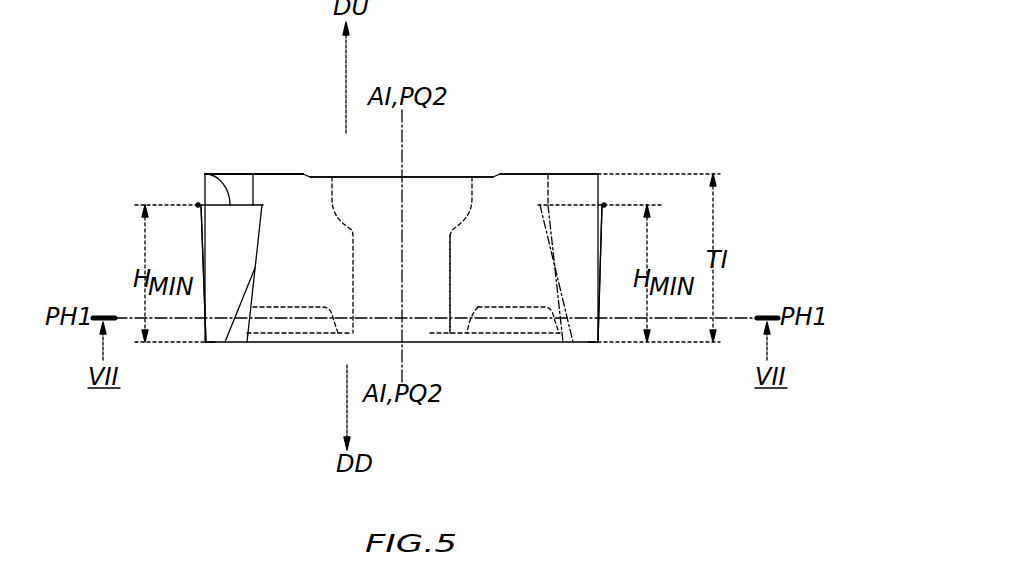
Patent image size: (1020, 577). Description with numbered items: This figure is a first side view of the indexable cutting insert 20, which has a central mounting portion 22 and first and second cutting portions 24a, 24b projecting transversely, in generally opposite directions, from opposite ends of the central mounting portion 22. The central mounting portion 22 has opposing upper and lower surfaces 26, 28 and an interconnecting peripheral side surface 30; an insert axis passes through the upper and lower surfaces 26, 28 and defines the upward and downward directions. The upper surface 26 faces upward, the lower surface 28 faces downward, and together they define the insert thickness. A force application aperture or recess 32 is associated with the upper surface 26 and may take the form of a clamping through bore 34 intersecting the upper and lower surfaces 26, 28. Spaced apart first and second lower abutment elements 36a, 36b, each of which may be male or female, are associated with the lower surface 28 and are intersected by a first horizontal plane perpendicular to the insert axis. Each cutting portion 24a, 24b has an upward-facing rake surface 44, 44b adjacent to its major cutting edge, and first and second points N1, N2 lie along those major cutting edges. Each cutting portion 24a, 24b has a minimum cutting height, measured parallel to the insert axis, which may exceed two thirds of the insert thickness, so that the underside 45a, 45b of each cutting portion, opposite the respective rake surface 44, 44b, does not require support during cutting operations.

The indexable cutting insert 20 is at (600, 95).
The upper surface 26 is at (253, 172).
The rake surface 44 is at (206, 172).
The first point N1 is at (198, 204).
The first cutting portion 24a is at (200, 260).
The underside of first cutting portion 45a is at (208, 348).
The lower surface 28 is at (266, 348).
The first lower abutment element 36a is at (285, 332).
The force application aperture or recess 32 is at (420, 172).
The clamping through bore 34 is at (441, 172).
The second rake surface 44b is at (572, 205).
The second point N2 is at (605, 204).
The second cutting portion 24b is at (608, 253).
The central mounting portion 22 is at (465, 296).
The second lower abutment element 36b is at (507, 332).
The peripheral side surface 30 is at (519, 278).
The underside of second cutting portion 45b is at (598, 350).